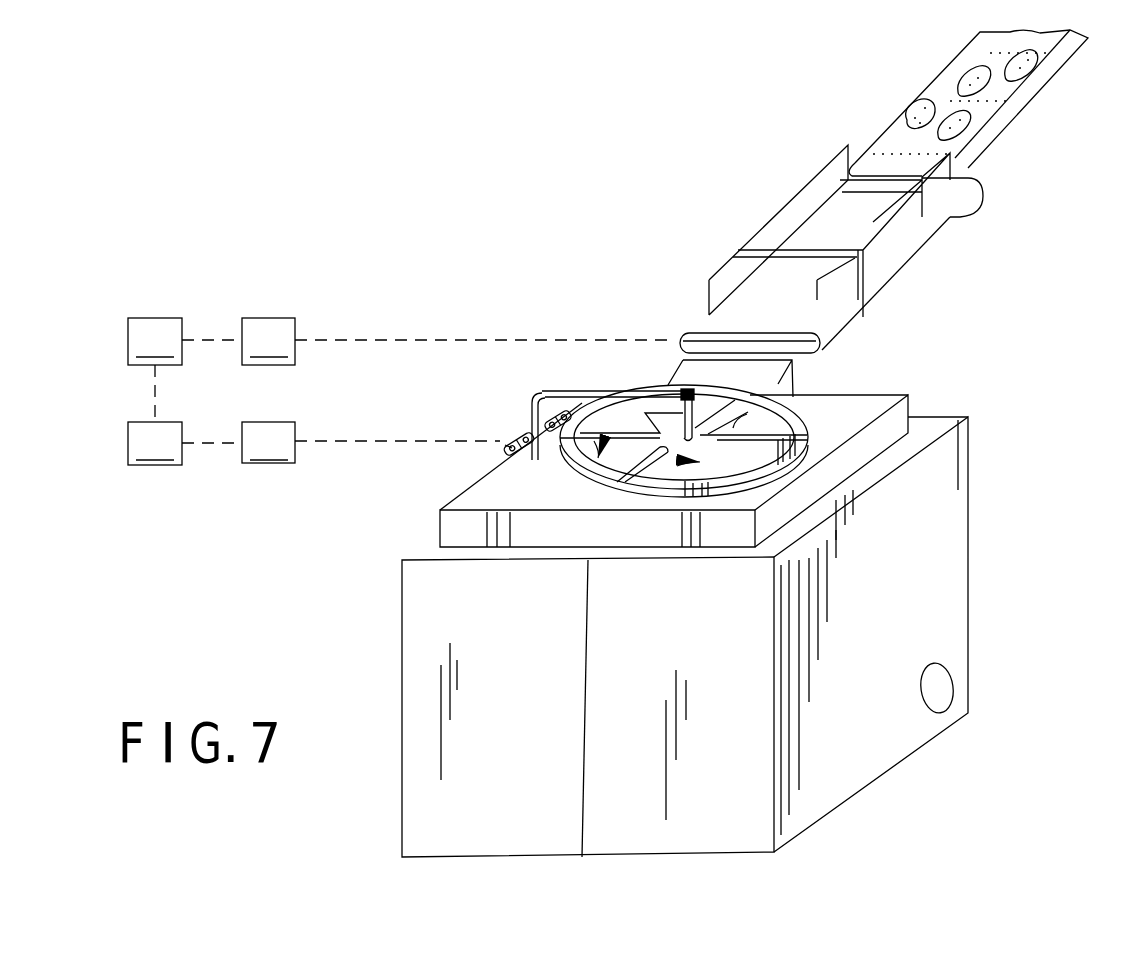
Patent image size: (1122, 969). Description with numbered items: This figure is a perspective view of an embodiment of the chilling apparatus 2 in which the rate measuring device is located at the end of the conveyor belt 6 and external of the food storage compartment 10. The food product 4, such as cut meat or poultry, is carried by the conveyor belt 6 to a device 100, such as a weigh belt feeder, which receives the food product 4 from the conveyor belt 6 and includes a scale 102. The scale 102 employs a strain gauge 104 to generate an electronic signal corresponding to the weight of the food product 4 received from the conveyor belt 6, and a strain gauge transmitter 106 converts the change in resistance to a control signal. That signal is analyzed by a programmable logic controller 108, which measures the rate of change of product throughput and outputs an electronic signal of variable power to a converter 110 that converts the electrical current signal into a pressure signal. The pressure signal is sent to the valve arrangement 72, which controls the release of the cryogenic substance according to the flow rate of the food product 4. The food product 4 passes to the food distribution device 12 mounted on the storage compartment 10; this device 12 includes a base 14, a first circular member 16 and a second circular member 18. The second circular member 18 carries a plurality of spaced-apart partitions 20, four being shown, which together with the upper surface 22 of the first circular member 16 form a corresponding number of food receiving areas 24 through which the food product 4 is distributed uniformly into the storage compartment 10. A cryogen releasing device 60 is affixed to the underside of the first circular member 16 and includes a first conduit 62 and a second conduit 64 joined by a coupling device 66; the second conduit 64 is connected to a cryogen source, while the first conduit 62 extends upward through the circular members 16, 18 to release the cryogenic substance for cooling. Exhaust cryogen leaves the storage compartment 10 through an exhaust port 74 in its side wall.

The apparatus for chilling a food product 2 is at (480, 267).
The food product 4 is at (933, 97).
The conveyor belt 6 is at (1017, 113).
The storage compartment 10 is at (873, 802).
The food distribution device 12 is at (430, 407).
The base 14 is at (452, 523).
The first circular member 16 is at (657, 487).
The second circular member 18 is at (505, 445).
The partitions 20 is at (800, 395).
The upper surface 22 is at (742, 422).
The food receiving areas 24 is at (735, 436).
The cryogen releasing device 60 is at (527, 393).
The first conduit 62 is at (643, 413).
The second conduit 64 is at (602, 392).
The coupling device 66 is at (678, 390).
The valve arrangement 72 is at (555, 390).
The exhaust port 74 is at (945, 685).
The device 100 is at (913, 268).
The scale 102 is at (950, 212).
The strain gauge 104 is at (268, 341).
The strain gauge transmitter 106 is at (155, 341).
The programmable logic controller 108 is at (155, 443).
The converter 110 is at (269, 442).